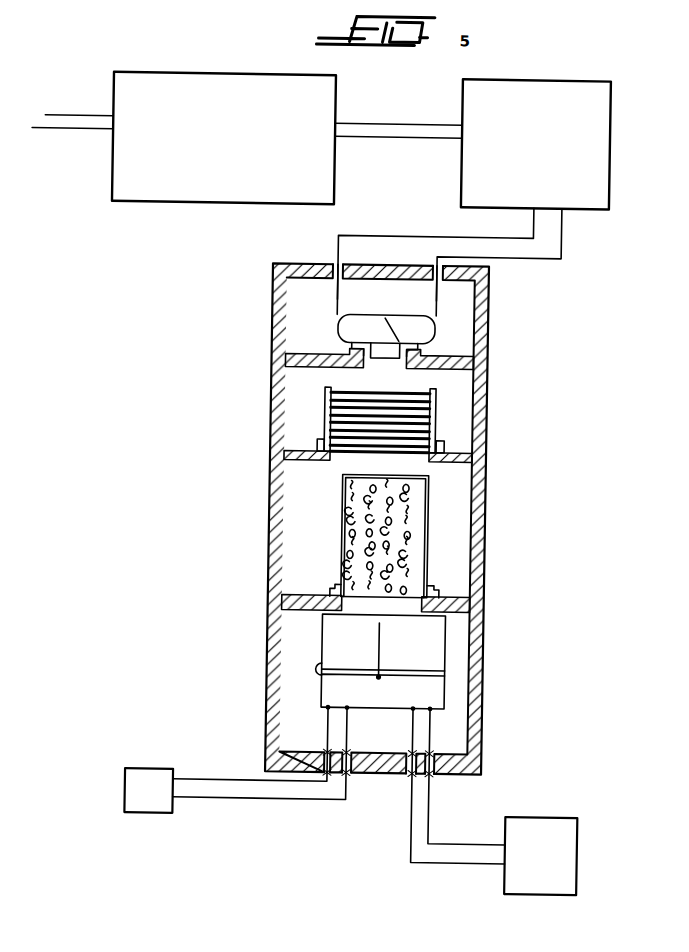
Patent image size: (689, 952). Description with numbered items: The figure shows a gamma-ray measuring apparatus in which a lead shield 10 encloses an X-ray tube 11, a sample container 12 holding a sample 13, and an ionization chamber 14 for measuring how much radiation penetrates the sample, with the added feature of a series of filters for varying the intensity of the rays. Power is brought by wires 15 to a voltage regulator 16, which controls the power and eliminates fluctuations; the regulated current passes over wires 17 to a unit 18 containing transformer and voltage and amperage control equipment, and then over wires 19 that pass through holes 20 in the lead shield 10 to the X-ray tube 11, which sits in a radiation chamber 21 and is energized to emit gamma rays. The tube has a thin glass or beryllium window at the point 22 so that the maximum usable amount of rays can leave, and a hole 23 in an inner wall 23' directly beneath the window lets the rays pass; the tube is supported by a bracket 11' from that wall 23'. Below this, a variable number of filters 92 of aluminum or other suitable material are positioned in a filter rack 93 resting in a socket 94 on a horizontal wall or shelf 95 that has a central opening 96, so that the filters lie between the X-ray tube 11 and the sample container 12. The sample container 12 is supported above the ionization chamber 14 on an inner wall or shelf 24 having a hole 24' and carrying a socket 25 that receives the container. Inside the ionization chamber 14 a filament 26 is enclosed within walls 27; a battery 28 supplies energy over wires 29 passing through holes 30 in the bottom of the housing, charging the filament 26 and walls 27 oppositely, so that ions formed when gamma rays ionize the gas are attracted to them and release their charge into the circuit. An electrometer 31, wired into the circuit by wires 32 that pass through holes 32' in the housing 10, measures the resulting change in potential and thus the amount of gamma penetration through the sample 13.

The lead shield 10 is at (488, 391).
The X-ray tube 11 is at (435, 329).
The bracket 11' is at (387, 346).
The sample container 12 is at (428, 566).
The sample 13 is at (417, 546).
The ionization chamber 14 is at (451, 655).
The wires 15 is at (60, 125).
The voltage regulator 16 is at (330, 114).
The wires 17 is at (386, 126).
The unit 18 is at (604, 121).
The wires 19 is at (557, 237).
The holes 20 is at (434, 265).
The radiation chamber 21 is at (462, 303).
The window 22 is at (387, 357).
The hole 23 is at (379, 371).
The inner wall 23' is at (414, 324).
The inner wall or shelf 24 is at (405, 598).
The hole 24' is at (354, 625).
The socket 25 is at (333, 590).
The filament 26 is at (382, 643).
The walls 27 is at (324, 666).
The battery 28 is at (161, 816).
The wires 29 is at (256, 800).
The holes 30 is at (330, 752).
The electrometer 31 is at (546, 892).
The wires 32 is at (465, 866).
The holes 32' is at (444, 786).
The filters 92 is at (431, 402).
The filter rack 93 is at (324, 409).
The socket 94 is at (317, 451).
The horizontal wall or shelf 95 is at (309, 458).
The central opening 96 is at (372, 457).